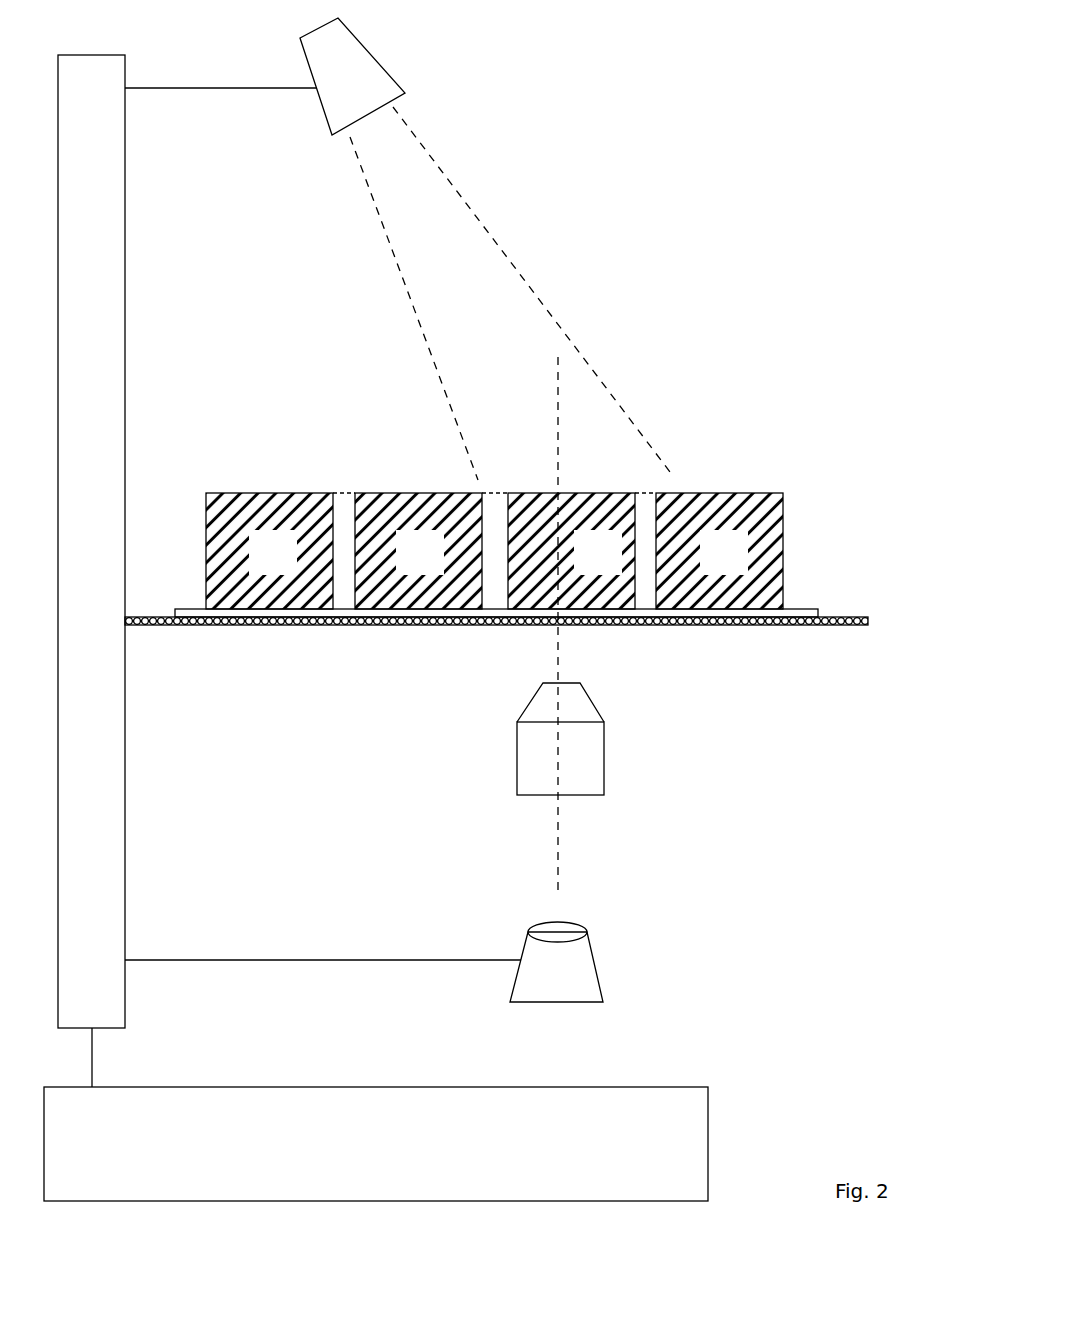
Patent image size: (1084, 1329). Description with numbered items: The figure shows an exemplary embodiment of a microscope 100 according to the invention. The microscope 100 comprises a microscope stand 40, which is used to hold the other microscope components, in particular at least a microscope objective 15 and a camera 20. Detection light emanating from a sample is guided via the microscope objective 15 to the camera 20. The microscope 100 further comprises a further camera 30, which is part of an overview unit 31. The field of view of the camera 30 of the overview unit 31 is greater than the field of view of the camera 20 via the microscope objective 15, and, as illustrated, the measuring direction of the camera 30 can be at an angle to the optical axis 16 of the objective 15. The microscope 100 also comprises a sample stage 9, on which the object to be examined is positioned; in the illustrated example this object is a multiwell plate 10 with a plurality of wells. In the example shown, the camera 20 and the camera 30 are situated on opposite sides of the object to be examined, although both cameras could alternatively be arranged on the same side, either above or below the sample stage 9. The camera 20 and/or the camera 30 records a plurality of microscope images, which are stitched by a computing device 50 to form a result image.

The microscope 100 is at (813, 127).
The sample stage 9 is at (868, 620).
The multiwell plate 10 is at (516, 555).
The microscope objective 15 is at (560, 739).
The optical axis 16 is at (560, 662).
The camera 20 is at (556, 962).
The camera 30 is at (352, 76).
The overview unit 31 is at (407, 80).
The microscope stand 40 is at (91, 541).
The computing device 50 is at (376, 1144).